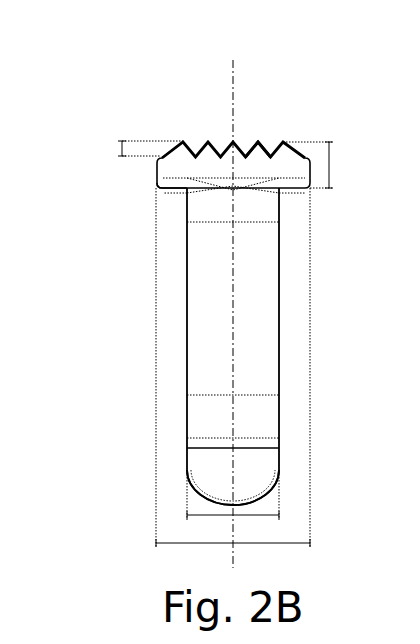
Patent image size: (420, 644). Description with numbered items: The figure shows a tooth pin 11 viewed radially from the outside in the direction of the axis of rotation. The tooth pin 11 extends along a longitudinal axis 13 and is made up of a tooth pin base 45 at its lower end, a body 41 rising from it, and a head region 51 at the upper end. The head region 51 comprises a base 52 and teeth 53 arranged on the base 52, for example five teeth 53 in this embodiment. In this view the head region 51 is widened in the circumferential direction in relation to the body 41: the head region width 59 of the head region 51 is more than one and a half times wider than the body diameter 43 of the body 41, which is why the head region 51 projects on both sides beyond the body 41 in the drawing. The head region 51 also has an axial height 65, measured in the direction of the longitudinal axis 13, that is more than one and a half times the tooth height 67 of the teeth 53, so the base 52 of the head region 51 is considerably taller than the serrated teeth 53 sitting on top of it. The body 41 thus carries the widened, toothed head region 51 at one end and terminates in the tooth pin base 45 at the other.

The tooth pin 11 is at (113, 90).
The longitudinal axis 13 is at (234, 88).
The body 41 is at (187, 313).
The body diameter 43 is at (205, 517).
The tooth pin base 45 is at (197, 492).
The head region 51 is at (126, 172).
The base 52 is at (154, 164).
The teeth 53 is at (259, 143).
The head region width 59 is at (287, 543).
The axial height 65 is at (332, 165).
The tooth height 67 is at (122, 150).